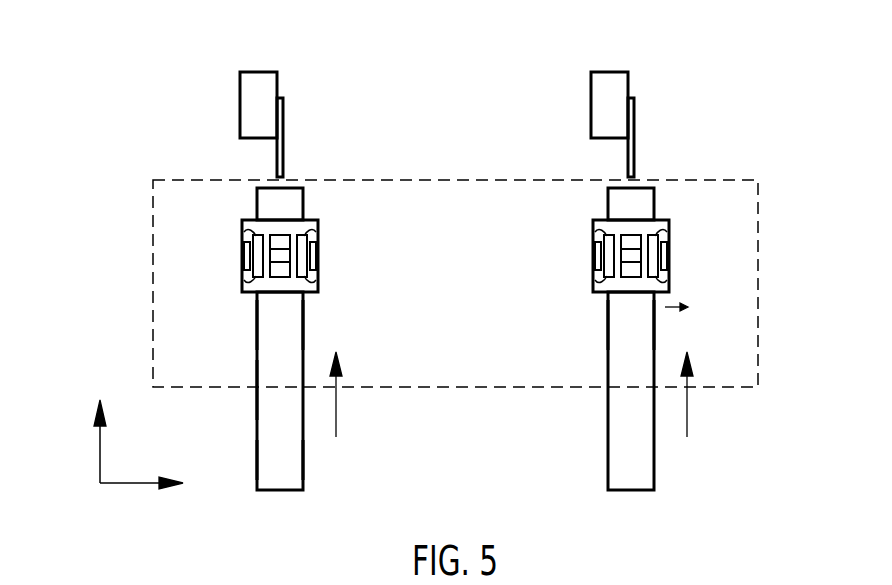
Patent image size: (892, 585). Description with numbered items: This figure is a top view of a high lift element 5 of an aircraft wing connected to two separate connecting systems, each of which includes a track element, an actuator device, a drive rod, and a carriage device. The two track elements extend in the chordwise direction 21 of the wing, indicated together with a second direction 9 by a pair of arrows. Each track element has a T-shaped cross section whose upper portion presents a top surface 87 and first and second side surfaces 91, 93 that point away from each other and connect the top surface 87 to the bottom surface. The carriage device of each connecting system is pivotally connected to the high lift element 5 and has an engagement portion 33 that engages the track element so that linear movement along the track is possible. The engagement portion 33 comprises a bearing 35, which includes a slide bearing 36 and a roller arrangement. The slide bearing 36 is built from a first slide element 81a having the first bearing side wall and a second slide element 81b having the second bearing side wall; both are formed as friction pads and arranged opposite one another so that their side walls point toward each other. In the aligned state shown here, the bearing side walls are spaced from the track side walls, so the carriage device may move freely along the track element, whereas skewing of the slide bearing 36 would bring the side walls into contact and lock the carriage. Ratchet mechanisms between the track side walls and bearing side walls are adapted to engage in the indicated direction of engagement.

The high lift element 5 is at (747, 364).
The first direction 9 is at (135, 484).
The chordwise direction 21 is at (100, 451).
The engagement portion 33 is at (646, 246).
The bearing 35 is at (610, 230).
The slide bearing 36 is at (634, 241).
The first slide element 81a is at (247, 258).
The second slide element 81b is at (317, 258).
The top surface 87 is at (267, 360).
The first side surface 91 is at (257, 463).
The second side surface 93 is at (303, 462).